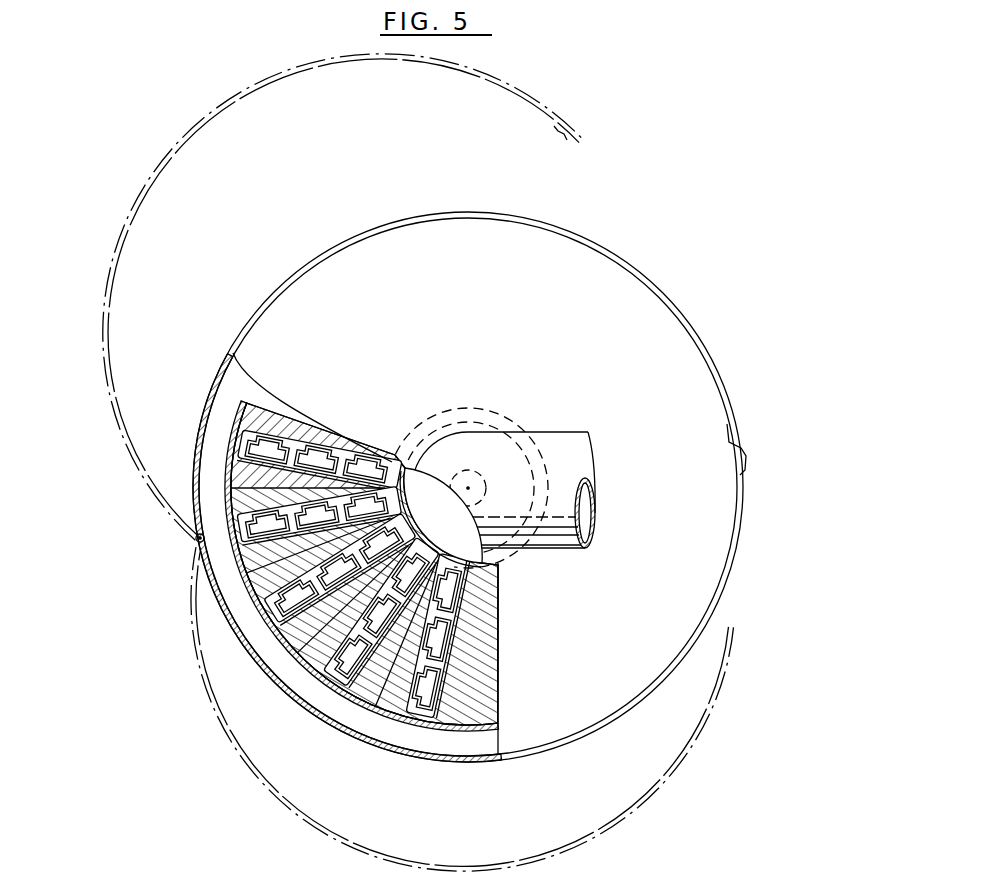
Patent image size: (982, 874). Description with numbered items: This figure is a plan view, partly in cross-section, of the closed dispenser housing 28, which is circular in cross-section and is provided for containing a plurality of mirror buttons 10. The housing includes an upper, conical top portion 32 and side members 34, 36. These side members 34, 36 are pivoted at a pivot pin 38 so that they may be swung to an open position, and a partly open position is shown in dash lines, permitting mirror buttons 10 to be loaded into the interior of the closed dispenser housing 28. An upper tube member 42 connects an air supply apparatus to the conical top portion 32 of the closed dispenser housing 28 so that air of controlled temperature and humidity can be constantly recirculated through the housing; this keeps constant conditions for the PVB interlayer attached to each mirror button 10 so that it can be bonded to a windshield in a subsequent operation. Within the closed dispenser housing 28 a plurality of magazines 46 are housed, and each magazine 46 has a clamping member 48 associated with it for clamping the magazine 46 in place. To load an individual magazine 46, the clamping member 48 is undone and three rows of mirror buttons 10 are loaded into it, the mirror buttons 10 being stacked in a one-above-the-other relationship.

The mirror button 10 is at (313, 458).
The closed dispenser housing 28 is at (667, 280).
The conical top portion 32 is at (468, 487).
The side member 34 is at (456, 765).
The side member 36 is at (232, 108).
The pivot pin 38 is at (197, 540).
The upper tube member 42 is at (573, 440).
The magazine 46 is at (342, 702).
The clamping member 48 is at (345, 668).